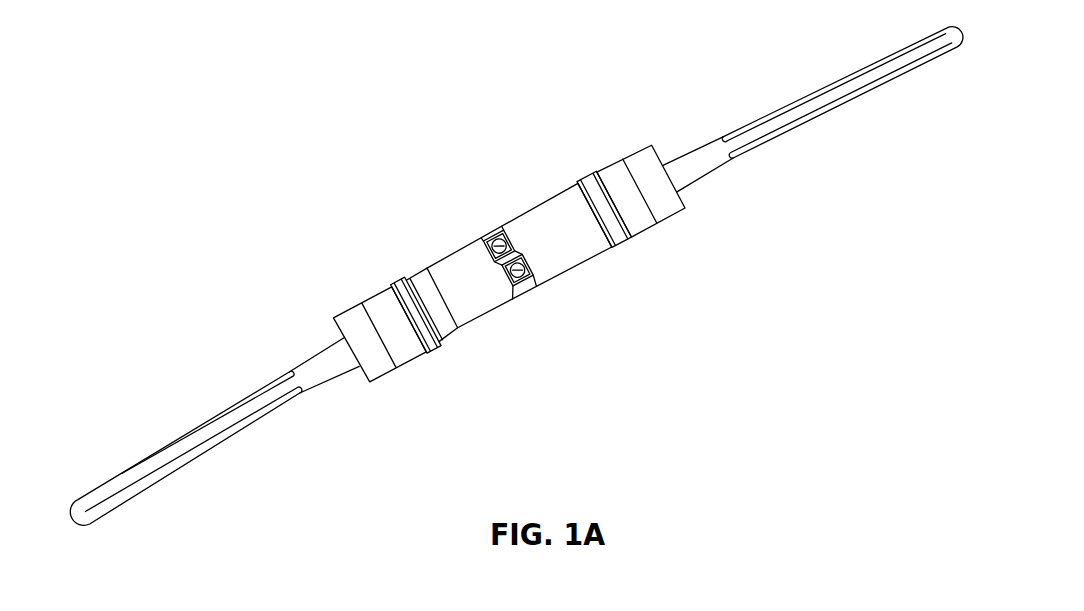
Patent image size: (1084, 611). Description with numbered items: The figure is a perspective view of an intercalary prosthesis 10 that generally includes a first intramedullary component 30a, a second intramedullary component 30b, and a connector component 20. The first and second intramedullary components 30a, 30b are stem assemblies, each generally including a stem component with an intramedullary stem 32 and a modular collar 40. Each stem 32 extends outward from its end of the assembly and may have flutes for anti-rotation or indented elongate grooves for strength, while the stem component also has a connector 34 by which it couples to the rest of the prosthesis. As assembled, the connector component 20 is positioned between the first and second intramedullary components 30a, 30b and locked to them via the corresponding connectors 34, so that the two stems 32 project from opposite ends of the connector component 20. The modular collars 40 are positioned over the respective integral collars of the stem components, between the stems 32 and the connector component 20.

The intercalary prosthesis 10 is at (357, 47).
The connector component 20 is at (468, 202).
The first intramedullary component 30a is at (762, 50).
The second intramedullary component 30b is at (237, 352).
The intramedullary stem 32 is at (733, 158).
The connector 34 is at (595, 237).
The modular collar 40 is at (615, 147).